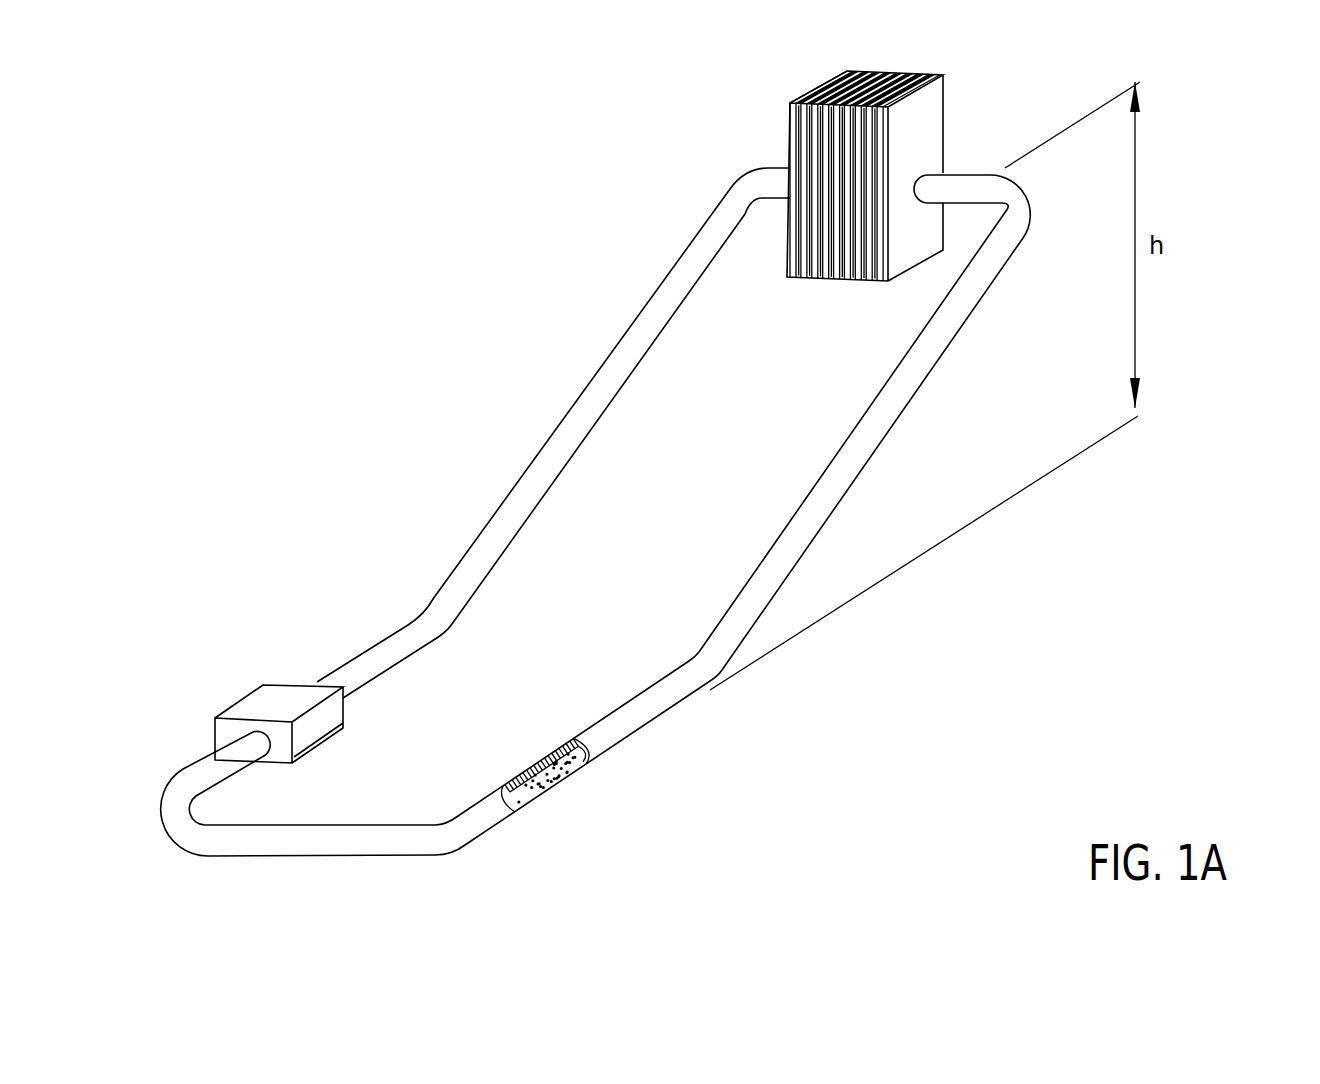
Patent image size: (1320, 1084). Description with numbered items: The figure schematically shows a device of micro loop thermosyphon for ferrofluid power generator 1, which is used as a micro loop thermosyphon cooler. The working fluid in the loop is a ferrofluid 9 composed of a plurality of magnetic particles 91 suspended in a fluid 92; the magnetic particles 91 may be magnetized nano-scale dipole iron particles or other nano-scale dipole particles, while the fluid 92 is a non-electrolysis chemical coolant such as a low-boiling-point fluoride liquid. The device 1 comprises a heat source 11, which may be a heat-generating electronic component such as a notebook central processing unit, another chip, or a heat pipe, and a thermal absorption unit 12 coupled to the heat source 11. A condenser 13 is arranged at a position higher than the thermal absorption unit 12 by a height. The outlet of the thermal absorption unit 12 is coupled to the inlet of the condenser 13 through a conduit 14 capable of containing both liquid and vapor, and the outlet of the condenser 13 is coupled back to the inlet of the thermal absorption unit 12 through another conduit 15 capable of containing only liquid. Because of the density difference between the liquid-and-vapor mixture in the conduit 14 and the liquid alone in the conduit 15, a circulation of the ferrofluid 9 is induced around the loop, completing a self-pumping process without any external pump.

The device of micro loop thermosyphon for ferrofluid power generator 1 is at (296, 348).
The heat source 11 is at (273, 765).
The thermal absorption unit 12 is at (263, 727).
The condenser 13 is at (803, 135).
The conduit containing both liquid and vapor 14 is at (610, 385).
The conduit containing only liquid 15 is at (890, 398).
The ferrofluid 9 is at (610, 781).
The magnetic particles 91 is at (587, 760).
The fluid 92 is at (530, 803).